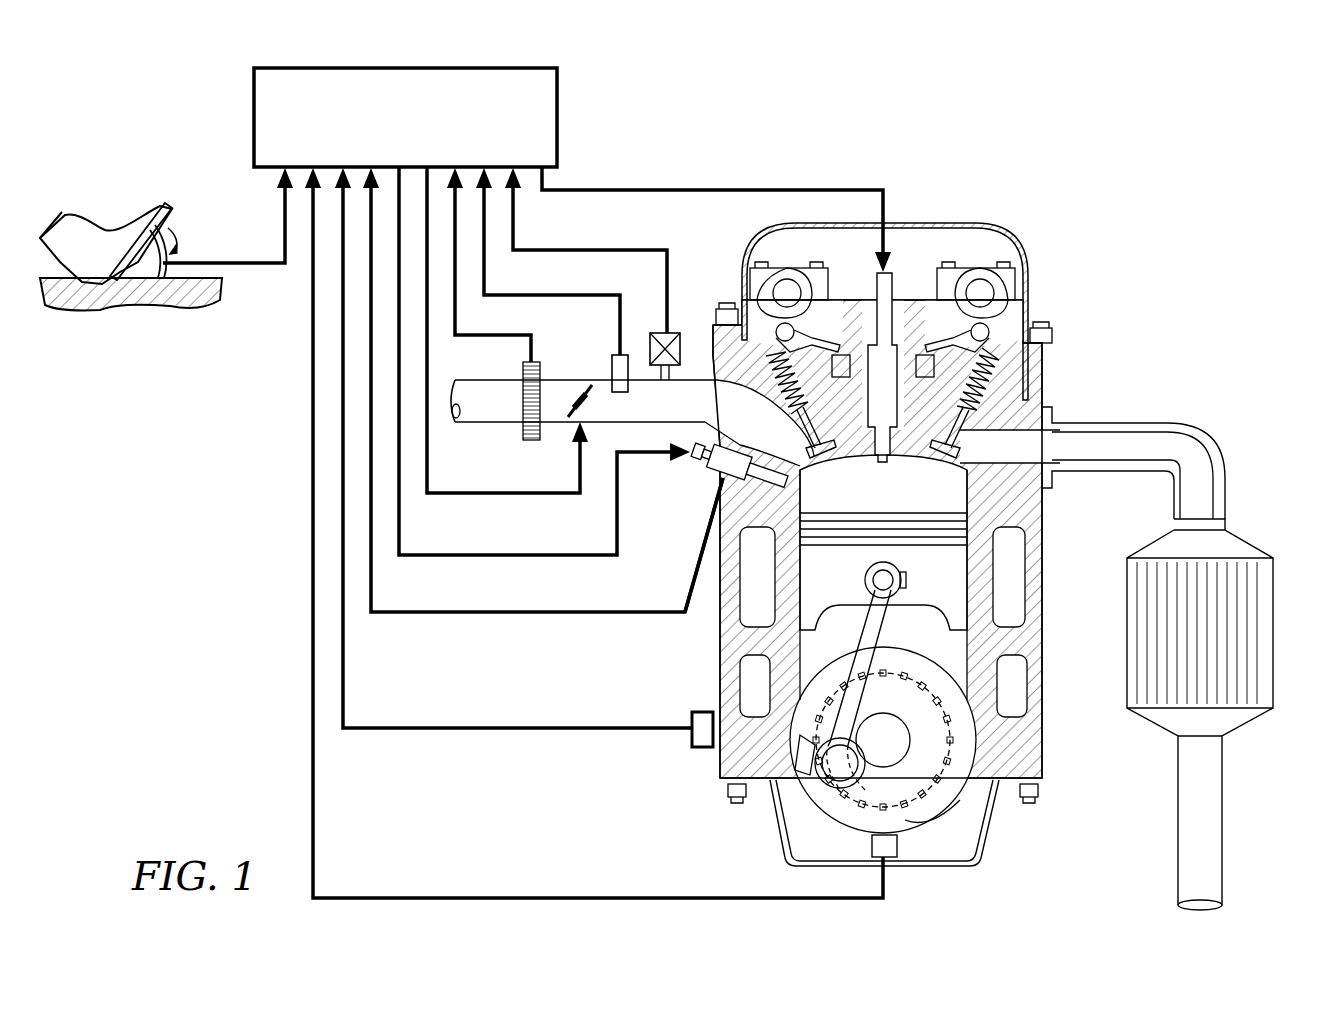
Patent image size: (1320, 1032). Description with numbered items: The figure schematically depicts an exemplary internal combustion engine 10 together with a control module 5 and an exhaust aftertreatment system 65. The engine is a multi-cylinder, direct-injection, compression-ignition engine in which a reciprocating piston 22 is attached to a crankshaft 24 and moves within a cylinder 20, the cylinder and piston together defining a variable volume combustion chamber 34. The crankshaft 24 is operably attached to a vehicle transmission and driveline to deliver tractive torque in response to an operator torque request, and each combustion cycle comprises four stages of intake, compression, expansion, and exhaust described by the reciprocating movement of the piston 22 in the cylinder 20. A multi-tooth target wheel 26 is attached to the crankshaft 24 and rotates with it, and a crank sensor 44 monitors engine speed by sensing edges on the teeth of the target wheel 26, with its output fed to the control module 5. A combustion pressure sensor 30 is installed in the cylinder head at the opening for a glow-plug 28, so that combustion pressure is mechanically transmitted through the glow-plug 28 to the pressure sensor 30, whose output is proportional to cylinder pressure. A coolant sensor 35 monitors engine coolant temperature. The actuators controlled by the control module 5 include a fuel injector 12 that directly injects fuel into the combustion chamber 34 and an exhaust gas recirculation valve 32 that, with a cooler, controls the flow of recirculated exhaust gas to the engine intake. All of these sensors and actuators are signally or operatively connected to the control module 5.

The control module 5 is at (540, 78).
The internal combustion engine 10 is at (1012, 245).
The fuel injector 12 is at (892, 290).
The cylinder 20 is at (965, 480).
The piston 22 is at (849, 586).
The crankshaft 24 is at (965, 745).
The multi-tooth target wheel 26 is at (930, 760).
The glow-plug 28 is at (645, 458).
The combustion pressure sensor 30 is at (648, 614).
The exhaust gas recirculation valve 32 is at (672, 333).
The combustion chamber 34 is at (895, 503).
The coolant sensor 35 is at (648, 731).
The crank sensor 44 is at (897, 846).
The exhaust aftertreatment system 65 is at (1245, 548).